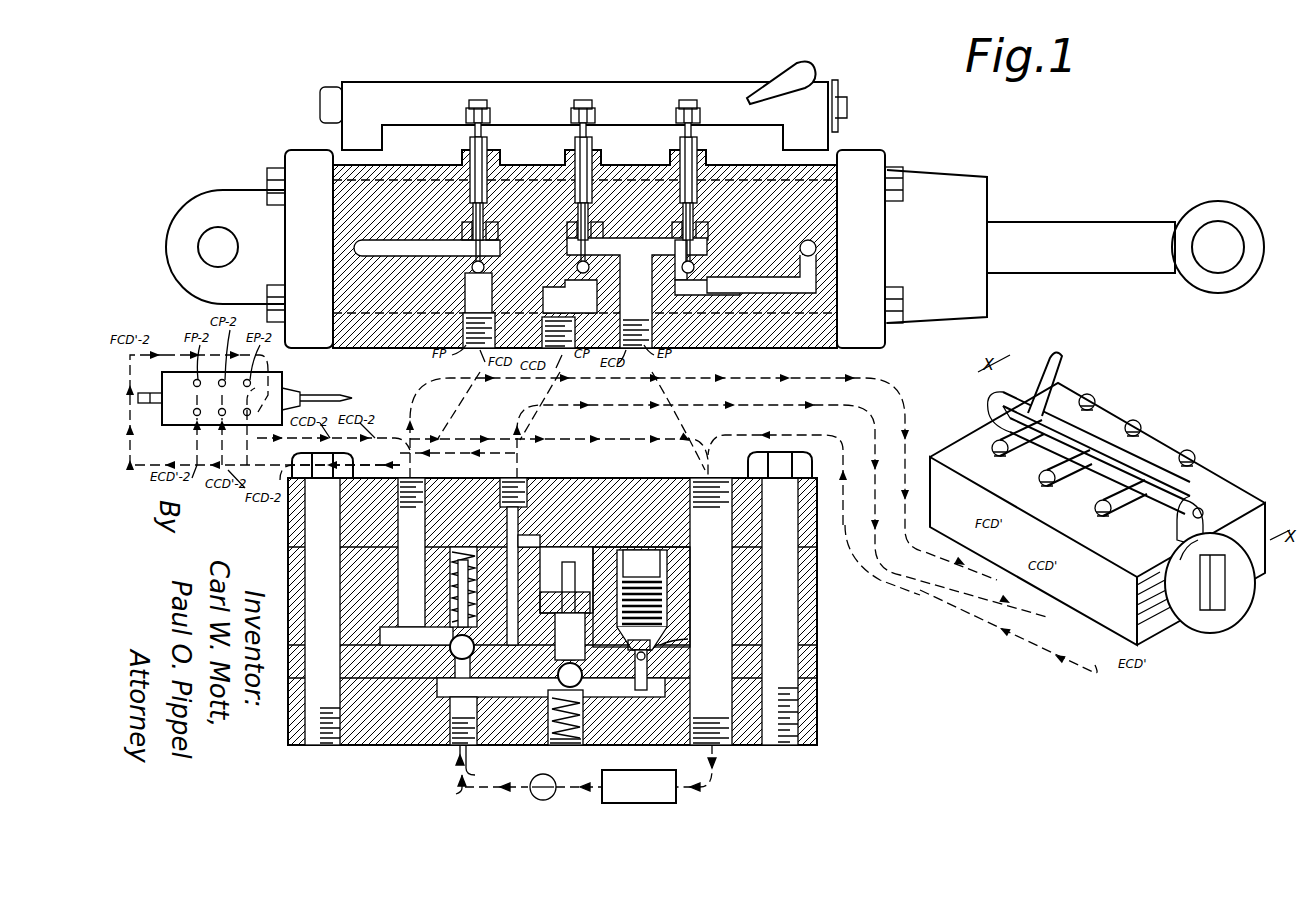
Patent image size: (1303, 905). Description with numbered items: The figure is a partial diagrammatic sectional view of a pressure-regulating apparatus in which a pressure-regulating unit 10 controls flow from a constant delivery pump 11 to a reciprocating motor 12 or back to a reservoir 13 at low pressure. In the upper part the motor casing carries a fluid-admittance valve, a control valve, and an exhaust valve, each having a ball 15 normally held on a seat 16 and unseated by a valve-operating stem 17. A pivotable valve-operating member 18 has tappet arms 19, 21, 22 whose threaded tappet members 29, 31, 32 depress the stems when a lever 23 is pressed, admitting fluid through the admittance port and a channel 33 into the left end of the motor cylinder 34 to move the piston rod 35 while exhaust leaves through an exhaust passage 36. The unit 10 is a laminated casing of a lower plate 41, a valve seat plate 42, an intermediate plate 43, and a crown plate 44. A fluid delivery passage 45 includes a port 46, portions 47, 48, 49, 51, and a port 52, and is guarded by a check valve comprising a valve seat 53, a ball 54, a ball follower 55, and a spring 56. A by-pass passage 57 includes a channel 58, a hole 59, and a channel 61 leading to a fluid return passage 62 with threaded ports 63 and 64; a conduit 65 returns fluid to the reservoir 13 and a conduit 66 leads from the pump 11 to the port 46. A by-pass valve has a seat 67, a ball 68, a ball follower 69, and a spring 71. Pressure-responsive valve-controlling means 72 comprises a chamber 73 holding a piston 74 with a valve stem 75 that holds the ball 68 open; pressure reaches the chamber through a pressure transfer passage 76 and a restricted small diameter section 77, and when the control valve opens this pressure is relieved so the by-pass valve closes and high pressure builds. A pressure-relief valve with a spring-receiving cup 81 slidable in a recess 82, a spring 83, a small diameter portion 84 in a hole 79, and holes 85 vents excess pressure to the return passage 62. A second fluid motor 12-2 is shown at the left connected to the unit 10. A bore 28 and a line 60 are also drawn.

The pressure-regulating unit 10 is at (285, 492).
The pump 11 is at (532, 795).
The reciprocating type of motor 12 is at (291, 148).
The reservoir 13 is at (630, 778).
The ball 15 is at (686, 252).
The seat 16 is at (478, 270).
The valve-operating stems 17 is at (470, 152).
The pivotable valve-operating member 18 is at (431, 82).
The tappet arm 19 is at (474, 128).
The tappet arm 21 is at (578, 128).
The tappet arm 22 is at (683, 128).
The lever 23 is at (800, 66).
The bore 28 is at (512, 500).
The threaded tappet member 29 is at (478, 100).
The threaded tappet member 31 is at (584, 100).
The threaded tappet member 32 is at (689, 100).
The channel 33 is at (427, 248).
The motor cylinder 34 is at (400, 185).
The piston rod 35 is at (1080, 226).
The exhaust passage 36 is at (815, 285).
The lower plate 41 is at (817, 714).
The valve seat plate 42 is at (817, 661).
The intermediate plate 43 is at (817, 587).
The crown plate 44 is at (817, 527).
The fluid delivery passage 45 is at (405, 565).
The port 46 is at (476, 764).
The fluid delivery passage portion 47 is at (450, 725).
The fluid delivery passage portion 48 is at (460, 680).
The fluid delivery passage portion 49 is at (400, 578).
The fluid delivery passage portion 51 is at (400, 490).
The port 52 is at (403, 478).
The valve seat 53 is at (445, 658).
The ball 54 is at (452, 643).
The ball follower 55 is at (458, 590).
The spring 56 is at (453, 603).
The by-pass passage 57 is at (548, 720).
The channel 58 is at (530, 700).
The hole 59 is at (560, 640).
The line 60 is at (575, 786).
The channel 61 is at (672, 630).
The fluid return passage 62 is at (722, 604).
The threaded port 63 is at (705, 476).
The threaded port 64 is at (730, 745).
The conduit 65 is at (714, 787).
The conduit 66 is at (483, 788).
The seat 67 is at (585, 676).
The ball 68 is at (556, 680).
The ball follower 69 is at (566, 745).
The spring 71 is at (583, 742).
The pressure-responsive valve-controlling means 72 is at (583, 547).
The chamber 73 is at (568, 547).
The piston 74 is at (577, 592).
The valve stem 75 is at (570, 633).
The pressure transfer passage 76 is at (518, 590).
The small diameter section 77 is at (565, 603).
The hole 79 is at (690, 670).
The spring-receiving cup 81 is at (665, 590).
The recess 82 is at (660, 560).
The spring 83 is at (660, 576).
The small diameter portion 84 is at (690, 656).
The holes 85 is at (628, 642).
The second fluid motor 12-2 is at (168, 370).